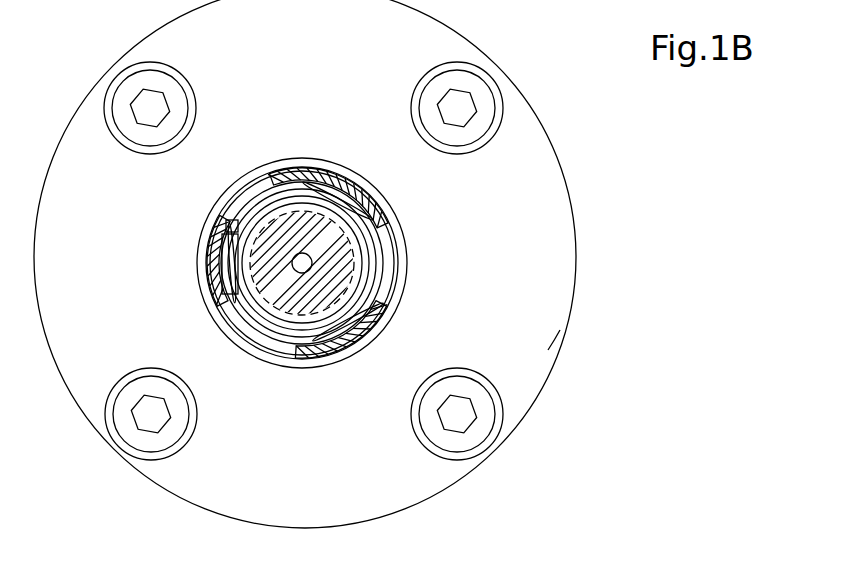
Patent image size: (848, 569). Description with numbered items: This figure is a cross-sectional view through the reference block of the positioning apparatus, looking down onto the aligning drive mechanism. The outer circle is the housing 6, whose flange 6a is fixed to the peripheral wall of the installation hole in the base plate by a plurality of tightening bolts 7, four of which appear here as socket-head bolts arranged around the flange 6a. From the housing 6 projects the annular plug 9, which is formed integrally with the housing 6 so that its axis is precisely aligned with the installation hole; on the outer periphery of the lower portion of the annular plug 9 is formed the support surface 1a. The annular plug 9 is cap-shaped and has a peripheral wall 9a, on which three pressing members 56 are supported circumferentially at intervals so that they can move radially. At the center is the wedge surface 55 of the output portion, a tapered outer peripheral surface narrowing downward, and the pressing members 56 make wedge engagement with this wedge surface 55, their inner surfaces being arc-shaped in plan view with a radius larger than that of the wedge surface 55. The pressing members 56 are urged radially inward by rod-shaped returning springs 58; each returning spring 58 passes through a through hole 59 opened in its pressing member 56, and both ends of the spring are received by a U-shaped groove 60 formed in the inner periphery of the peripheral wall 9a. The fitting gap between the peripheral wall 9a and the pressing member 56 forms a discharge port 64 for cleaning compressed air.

The support surface 1a is at (408, 270).
The housing 6 is at (577, 243).
The flange 6a is at (548, 328).
The tightening bolts 7 is at (118, 419).
The annular plug 9 is at (395, 225).
The peripheral wall 9a is at (388, 305).
The wedge surface 55 is at (294, 318).
The pressing members 56 is at (340, 182).
The returning springs 58 is at (310, 172).
The through hole 59 is at (226, 240).
The U-shaped groove 60 is at (262, 322).
The discharge port 64 is at (230, 226).